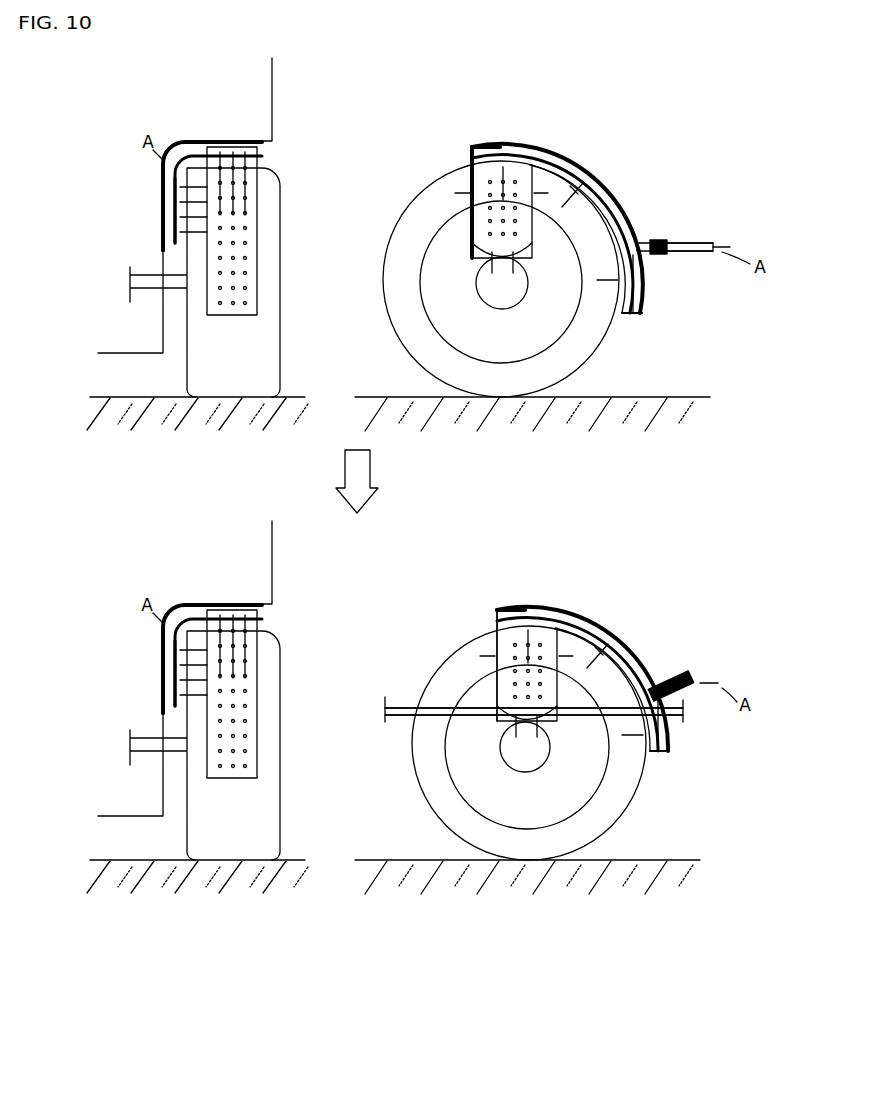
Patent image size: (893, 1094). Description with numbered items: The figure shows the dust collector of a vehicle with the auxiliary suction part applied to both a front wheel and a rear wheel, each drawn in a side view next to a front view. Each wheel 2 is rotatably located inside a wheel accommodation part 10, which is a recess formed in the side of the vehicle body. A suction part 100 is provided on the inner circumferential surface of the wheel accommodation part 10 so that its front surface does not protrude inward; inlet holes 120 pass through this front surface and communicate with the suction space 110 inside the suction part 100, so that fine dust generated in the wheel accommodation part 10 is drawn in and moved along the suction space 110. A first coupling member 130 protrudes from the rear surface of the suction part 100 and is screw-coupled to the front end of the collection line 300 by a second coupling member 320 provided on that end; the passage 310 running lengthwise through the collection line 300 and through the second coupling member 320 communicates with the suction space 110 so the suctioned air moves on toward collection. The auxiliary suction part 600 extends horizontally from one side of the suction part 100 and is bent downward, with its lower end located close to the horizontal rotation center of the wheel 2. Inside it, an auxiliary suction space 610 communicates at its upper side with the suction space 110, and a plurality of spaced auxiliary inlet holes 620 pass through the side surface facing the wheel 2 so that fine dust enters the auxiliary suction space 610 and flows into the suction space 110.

The wheel 2 is at (305, 681).
The wheel accommodation part 10 is at (152, 916).
The suction part 100 is at (231, 599).
The suction space 110 is at (572, 618).
The inlet hole 120 is at (495, 640).
The first coupling member 130 is at (663, 677).
The collection line 300 is at (382, 750).
The passage 310 is at (688, 694).
The second coupling member 320 is at (680, 674).
The auxiliary suction part 600 is at (488, 652).
The auxiliary suction space 610 is at (505, 606).
The auxiliary inlet hole 620 is at (490, 686).